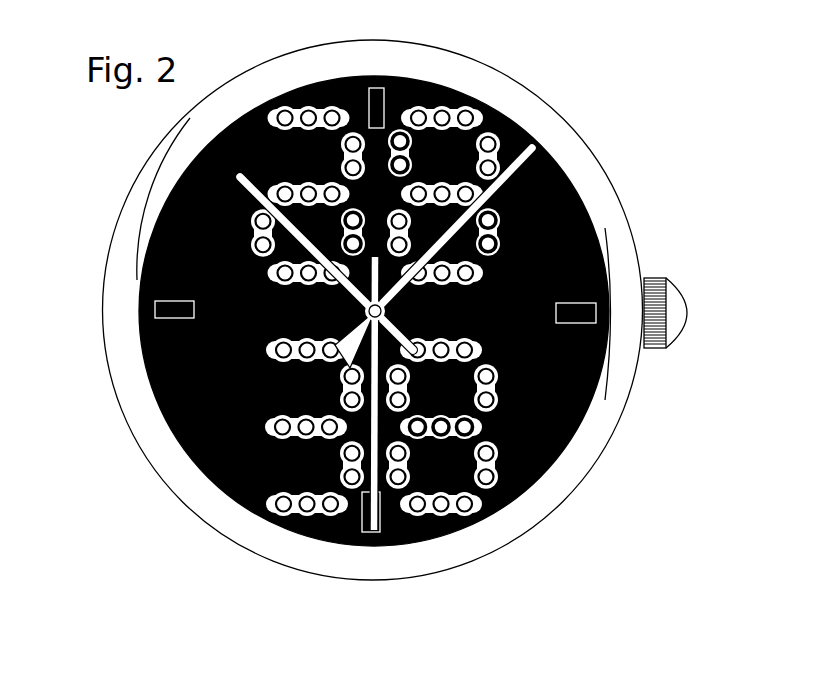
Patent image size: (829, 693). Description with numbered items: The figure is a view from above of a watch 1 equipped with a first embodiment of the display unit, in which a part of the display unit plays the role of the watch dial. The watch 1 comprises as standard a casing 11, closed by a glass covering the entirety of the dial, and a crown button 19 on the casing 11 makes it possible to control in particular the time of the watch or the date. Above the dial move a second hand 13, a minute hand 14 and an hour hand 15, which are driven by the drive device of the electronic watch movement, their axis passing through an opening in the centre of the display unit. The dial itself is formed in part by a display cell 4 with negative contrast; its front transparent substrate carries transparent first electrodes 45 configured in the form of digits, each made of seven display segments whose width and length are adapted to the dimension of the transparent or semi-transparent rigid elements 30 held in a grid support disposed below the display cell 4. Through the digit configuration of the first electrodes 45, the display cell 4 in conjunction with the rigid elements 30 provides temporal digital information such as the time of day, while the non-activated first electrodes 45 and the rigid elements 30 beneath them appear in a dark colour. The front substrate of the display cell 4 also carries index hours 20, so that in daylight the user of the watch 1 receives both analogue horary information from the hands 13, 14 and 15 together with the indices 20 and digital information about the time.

The watch 1 is at (642, 136).
The display cell 4 is at (614, 242).
The casing 11 is at (472, 74).
The second hand 13 is at (532, 150).
The minute hand 14 is at (373, 532).
The hour hand 15 is at (240, 176).
The crown button 19 is at (675, 313).
The index hours 20 is at (165, 310).
The rigid elements 30 is at (253, 233).
The first electrodes 45 is at (309, 104).